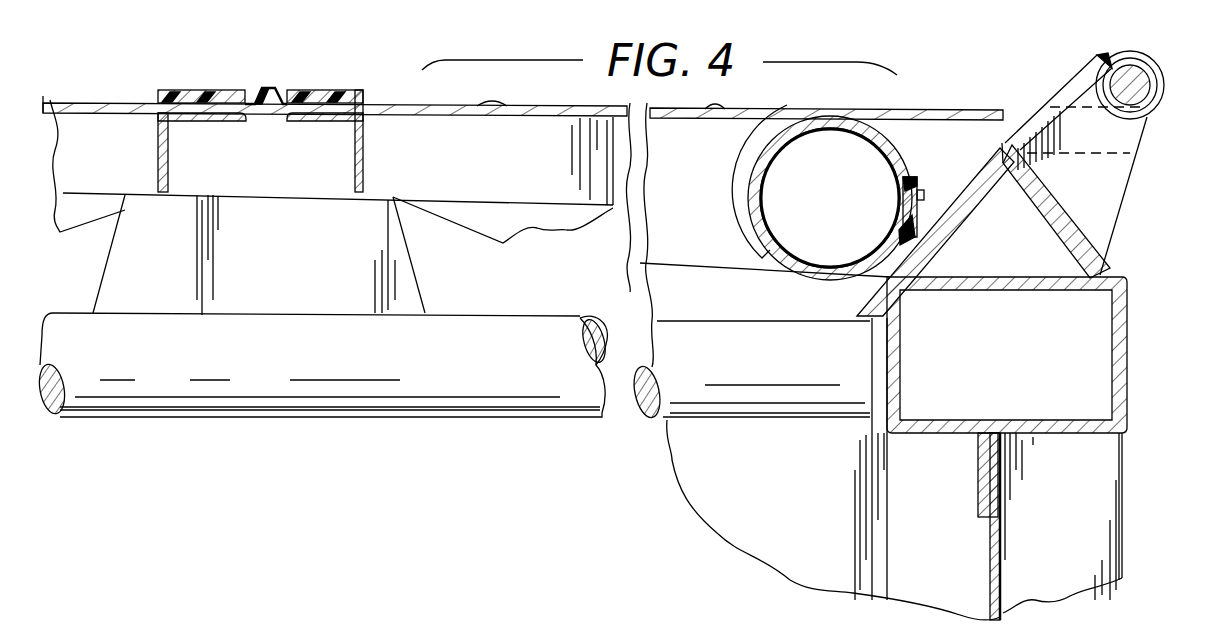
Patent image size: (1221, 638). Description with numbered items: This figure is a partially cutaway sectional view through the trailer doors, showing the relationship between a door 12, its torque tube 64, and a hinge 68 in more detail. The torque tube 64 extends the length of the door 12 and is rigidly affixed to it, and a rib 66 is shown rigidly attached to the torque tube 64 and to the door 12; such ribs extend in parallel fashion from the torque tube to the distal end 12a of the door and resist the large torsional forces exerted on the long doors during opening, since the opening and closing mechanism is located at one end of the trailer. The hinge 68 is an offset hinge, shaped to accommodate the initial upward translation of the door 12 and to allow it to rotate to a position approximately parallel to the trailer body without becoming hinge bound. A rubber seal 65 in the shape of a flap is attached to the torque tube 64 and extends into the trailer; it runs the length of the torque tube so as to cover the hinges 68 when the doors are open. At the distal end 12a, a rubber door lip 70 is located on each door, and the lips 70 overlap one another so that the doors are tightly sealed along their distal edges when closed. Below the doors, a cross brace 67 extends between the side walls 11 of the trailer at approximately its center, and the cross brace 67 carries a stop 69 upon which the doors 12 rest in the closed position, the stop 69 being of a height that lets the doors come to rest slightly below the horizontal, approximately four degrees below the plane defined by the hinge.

The side wall 11 is at (1000, 550).
The door 12 is at (430, 113).
The distal end 12a is at (347, 110).
The torque tube 64 is at (767, 155).
The rubber seal 65 is at (917, 180).
The rib 66 is at (660, 225).
The cross brace 67 is at (527, 397).
The hinge 68 is at (1143, 77).
The stop 69 is at (405, 263).
The rubber door lip 70 is at (195, 92).